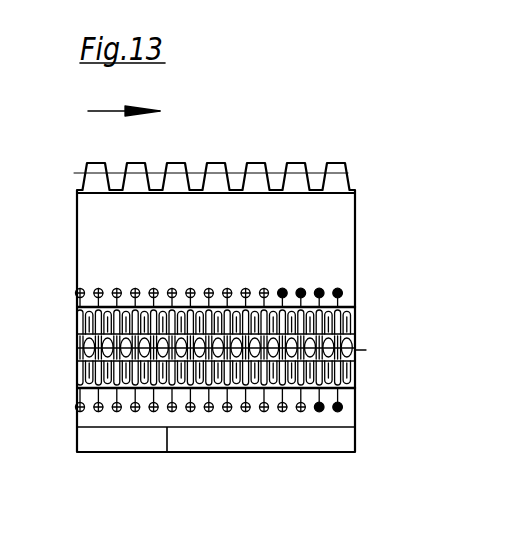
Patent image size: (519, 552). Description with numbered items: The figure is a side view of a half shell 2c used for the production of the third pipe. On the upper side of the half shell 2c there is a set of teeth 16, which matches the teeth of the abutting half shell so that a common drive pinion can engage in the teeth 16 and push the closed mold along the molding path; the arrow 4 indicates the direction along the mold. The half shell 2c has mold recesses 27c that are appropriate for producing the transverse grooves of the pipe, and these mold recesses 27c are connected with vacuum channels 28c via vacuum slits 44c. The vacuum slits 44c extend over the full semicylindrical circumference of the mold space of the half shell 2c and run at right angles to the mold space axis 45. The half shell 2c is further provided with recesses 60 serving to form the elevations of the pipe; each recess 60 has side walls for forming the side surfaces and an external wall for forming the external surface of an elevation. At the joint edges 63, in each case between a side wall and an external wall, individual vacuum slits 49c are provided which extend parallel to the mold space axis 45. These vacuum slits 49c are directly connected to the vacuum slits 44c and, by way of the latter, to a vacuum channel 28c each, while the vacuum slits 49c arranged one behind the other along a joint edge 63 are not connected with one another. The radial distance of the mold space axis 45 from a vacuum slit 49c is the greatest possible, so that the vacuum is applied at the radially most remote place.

The viewing direction arrow 4 is at (124, 96).
The half shell 2c is at (369, 166).
The set of teeth 16 is at (252, 168).
The mold recesses 27c is at (254, 305).
The vacuum channels 28c is at (158, 287).
The vacuum slits 44c is at (343, 300).
The individual vacuum slits 49c is at (342, 392).
The joint edges 63 is at (357, 321).
The recesses 60 is at (90, 356).
The mold space axis 45 is at (90, 351).